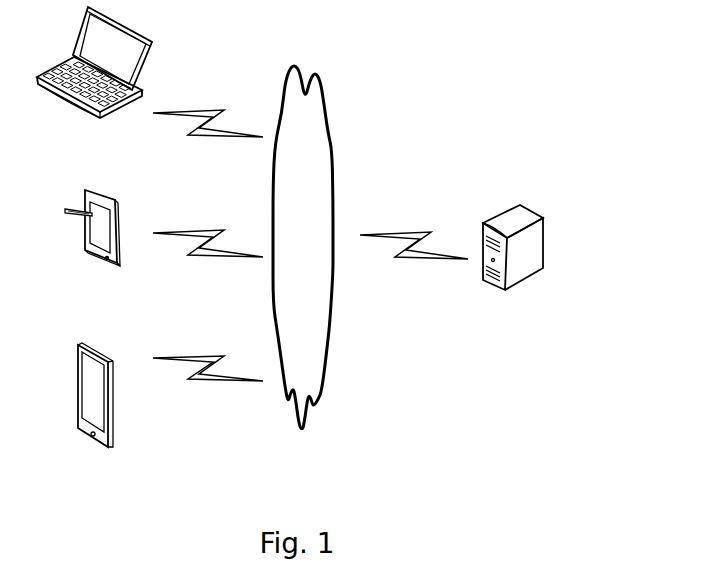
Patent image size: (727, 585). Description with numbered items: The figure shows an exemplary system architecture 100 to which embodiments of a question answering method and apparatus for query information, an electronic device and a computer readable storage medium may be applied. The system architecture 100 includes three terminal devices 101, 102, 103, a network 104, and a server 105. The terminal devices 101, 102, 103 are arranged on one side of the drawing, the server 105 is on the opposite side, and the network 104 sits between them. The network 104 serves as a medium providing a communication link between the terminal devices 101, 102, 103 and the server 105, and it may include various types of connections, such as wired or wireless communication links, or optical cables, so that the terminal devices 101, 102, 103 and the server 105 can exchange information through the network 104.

The system architecture 100 is at (538, 46).
The terminal device 101 is at (97, 414).
The terminal device 102 is at (92, 243).
The terminal device 103 is at (94, 79).
The network 104 is at (303, 247).
The server 105 is at (513, 267).